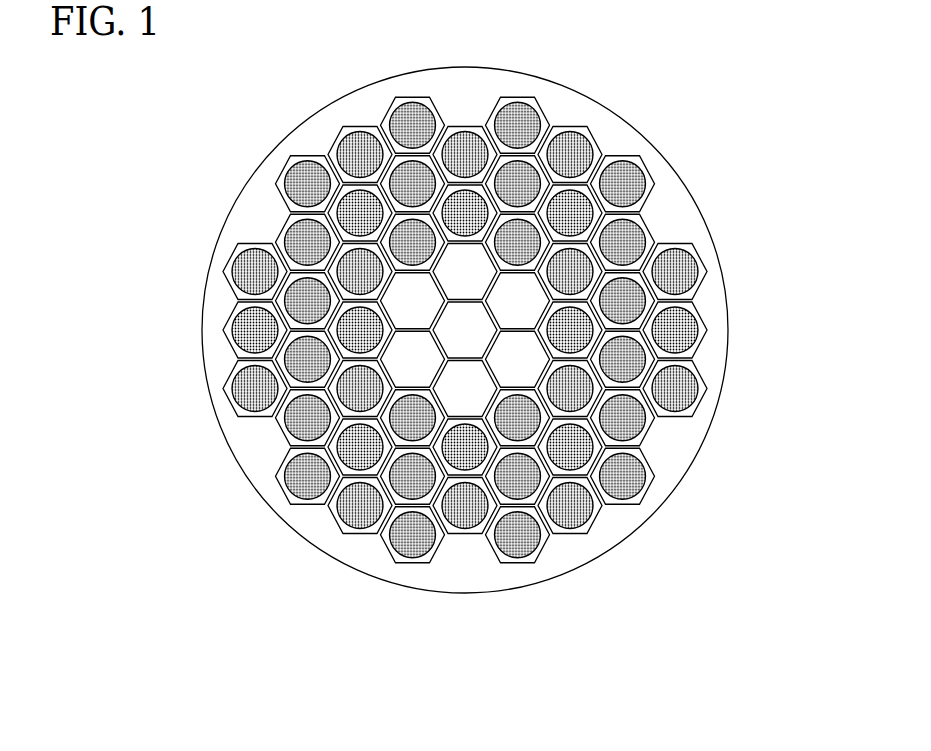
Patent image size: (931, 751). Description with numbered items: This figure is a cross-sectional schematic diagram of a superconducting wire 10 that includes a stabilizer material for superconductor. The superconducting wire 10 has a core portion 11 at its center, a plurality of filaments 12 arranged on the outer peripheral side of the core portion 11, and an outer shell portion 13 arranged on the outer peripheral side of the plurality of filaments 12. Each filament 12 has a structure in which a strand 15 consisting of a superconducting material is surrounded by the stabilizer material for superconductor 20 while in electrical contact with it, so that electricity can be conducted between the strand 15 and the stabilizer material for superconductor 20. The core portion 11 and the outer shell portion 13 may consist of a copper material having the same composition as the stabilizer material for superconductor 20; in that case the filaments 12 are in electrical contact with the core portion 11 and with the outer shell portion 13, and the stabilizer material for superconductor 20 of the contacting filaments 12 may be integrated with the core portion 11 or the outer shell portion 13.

The superconducting wire 10 is at (707, 108).
The core portion 11 is at (408, 362).
The filament 12 is at (655, 232).
The outer shell portion 13 is at (682, 448).
The strand 15 is at (683, 337).
The stabilizer material for superconductor 20 is at (698, 315).